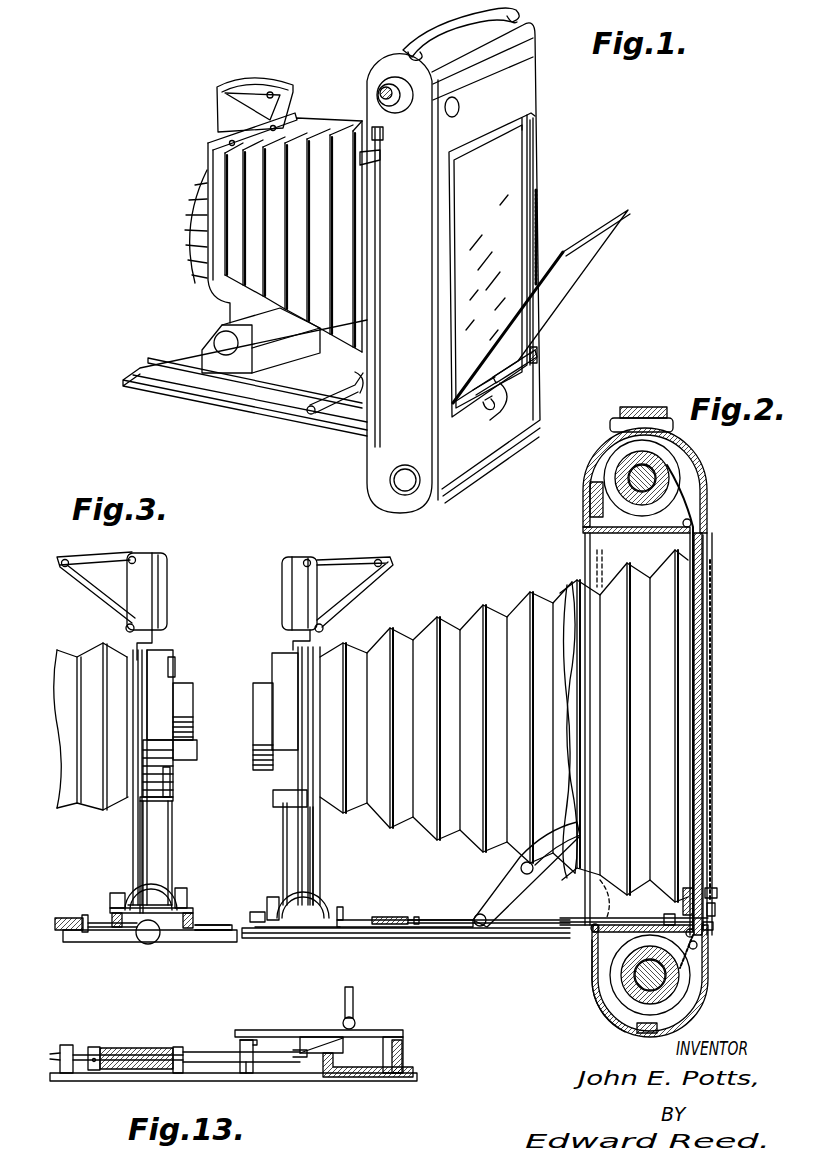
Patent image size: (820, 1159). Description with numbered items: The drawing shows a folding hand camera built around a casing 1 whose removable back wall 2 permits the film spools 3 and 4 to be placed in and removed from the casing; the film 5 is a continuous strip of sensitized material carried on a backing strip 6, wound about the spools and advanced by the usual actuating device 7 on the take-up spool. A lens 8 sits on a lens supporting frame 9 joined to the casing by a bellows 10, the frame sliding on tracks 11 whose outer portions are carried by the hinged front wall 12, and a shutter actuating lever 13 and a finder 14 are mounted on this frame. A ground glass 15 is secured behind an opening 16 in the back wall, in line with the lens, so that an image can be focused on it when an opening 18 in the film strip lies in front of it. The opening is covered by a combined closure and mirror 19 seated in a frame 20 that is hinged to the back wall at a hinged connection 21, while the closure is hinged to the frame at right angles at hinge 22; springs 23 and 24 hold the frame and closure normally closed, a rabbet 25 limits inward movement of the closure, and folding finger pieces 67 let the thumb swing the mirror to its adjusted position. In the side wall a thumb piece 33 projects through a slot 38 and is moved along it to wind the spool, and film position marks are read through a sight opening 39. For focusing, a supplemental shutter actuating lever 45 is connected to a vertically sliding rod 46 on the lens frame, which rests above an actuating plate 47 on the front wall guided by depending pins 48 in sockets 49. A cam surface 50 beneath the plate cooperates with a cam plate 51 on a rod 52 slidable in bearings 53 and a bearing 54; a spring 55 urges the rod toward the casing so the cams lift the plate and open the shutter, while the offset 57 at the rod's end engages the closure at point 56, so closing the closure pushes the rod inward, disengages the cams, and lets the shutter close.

In FIG. 1, the casing 1 is at (367, 447).
In FIG. 2, the casing 1 is at (592, 983).
In FIG. 1, the back wall 2 is at (510, 432).
In FIG. 2, the back wall 2 is at (712, 950).
In FIG. 2, the film spool 3 is at (690, 992).
In FIG. 2, the film spool 4 is at (665, 470).
In FIG. 2, the film 5 is at (690, 512).
In FIG. 2, the backing strip 6 is at (697, 933).
In FIG. 1, the actuating device 7 is at (378, 80).
In FIG. 3, the lens 8 is at (183, 717).
In FIG. 1, the lens supporting frame 9 is at (243, 300).
In FIG. 3, the lens supporting frame 9 is at (139, 838).
In FIG. 1, the bellows 10 is at (336, 126).
In FIG. 3, the bellows 10 is at (65, 652).
In FIG. 1, the tracks 11 is at (152, 360).
In FIG. 3, the tracks 11 is at (227, 932).
In FIG. 1, the hinged front wall 12 is at (248, 407).
In FIG. 3, the hinged front wall 12 is at (102, 942).
In FIG. 3, the lever 13 is at (178, 653).
In FIG. 1, the finder 14 is at (277, 80).
In FIG. 3, the finder 14 is at (147, 560).
In FIG. 1, the ground glass 15 is at (505, 190).
In FIG. 2, the ground glass 15 is at (702, 693).
In FIG. 1, the opening 16 is at (452, 235).
In FIG. 2, the openings 18 is at (706, 890).
In FIG. 1, the closure 19 is at (573, 271).
In FIG. 2, the closure 19 is at (712, 602).
In FIG. 1, the frame 20 is at (532, 116).
In FIG. 2, the frame 20 is at (709, 553).
In FIG. 1, the hinged connection 21 is at (535, 195).
In FIG. 2, the hinged connection 21 is at (706, 640).
In FIG. 1, the hinge 22 is at (530, 368).
In FIG. 2, the hinge 22 is at (713, 910).
In FIG. 1, the spring 23 is at (537, 233).
In FIG. 2, the spring 23 is at (713, 725).
In FIG. 1, the spring 24 is at (500, 410).
In FIG. 1, the rabbet 25 is at (531, 135).
In FIG. 1, the thumb piece 33 is at (381, 165).
In FIG. 1, the slot 38 is at (382, 233).
In FIG. 1, the sight opening 39 is at (459, 107).
In FIG. 3, the shutter actuating lever 45 is at (173, 777).
In FIG. 3, the rod 46 is at (172, 832).
In FIG. 13, the rod 46 is at (355, 997).
In FIG. 3, the actuating plate 47 is at (187, 910).
In FIG. 13, the actuating plate 47 is at (293, 1030).
In FIG. 3, the guide pins 48 is at (193, 910).
In FIG. 13, the guide pins 48 is at (403, 1042).
In FIG. 3, the sockets 49 is at (197, 924).
In FIG. 13, the sockets 49 is at (253, 1076).
In FIG. 3, the cam surface 50 is at (153, 936).
In FIG. 13, the cam surface 50 is at (318, 1038).
In FIG. 3, the cam plate 51 is at (156, 912).
In FIG. 13, the cam plate 51 is at (343, 1046).
In FIG. 2, the rod 52 is at (612, 557).
In FIG. 3, the rod 52 is at (118, 920).
In FIG. 13, the rod 52 is at (213, 1052).
In FIG. 3, the bearings 53 is at (85, 919).
In FIG. 13, the bearings 53 is at (70, 1047).
In FIG. 2, the bearing 54 is at (665, 915).
In FIG. 3, the spring 55 is at (72, 915).
In FIG. 13, the spring 55 is at (133, 1047).
In FIG. 2, the engagement point 56 is at (715, 893).
In FIG. 2, the offset 57 is at (717, 913).
In FIG. 1, the finger pieces 67 is at (490, 372).